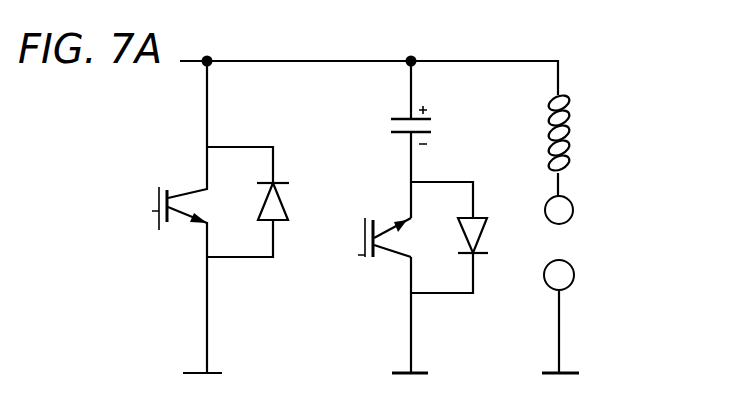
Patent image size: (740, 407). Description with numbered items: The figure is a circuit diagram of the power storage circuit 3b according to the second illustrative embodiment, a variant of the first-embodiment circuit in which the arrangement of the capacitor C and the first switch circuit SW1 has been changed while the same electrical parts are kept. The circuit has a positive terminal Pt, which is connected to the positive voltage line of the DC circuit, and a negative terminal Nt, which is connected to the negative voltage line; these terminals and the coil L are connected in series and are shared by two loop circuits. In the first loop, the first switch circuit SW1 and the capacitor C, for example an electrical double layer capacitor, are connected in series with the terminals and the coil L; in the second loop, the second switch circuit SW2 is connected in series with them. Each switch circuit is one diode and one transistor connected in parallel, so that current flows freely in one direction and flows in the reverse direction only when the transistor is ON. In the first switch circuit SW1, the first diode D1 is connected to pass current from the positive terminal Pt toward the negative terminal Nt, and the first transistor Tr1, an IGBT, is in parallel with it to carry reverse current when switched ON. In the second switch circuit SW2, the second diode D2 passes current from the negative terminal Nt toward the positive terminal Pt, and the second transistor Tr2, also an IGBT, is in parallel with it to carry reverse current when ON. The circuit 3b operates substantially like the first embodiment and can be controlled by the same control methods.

The power storage circuit 3b is at (646, 56).
The first switch circuit SW1 is at (446, 163).
The second switch circuit SW2 is at (250, 137).
The first transistor Tr1 is at (363, 266).
The second transistor Tr2 is at (158, 233).
The first diode D1 is at (480, 210).
The second diode D2 is at (282, 211).
The capacitor C is at (428, 114).
The coil L is at (572, 137).
The positive terminal Pt is at (559, 210).
The negative terminal Nt is at (559, 316).